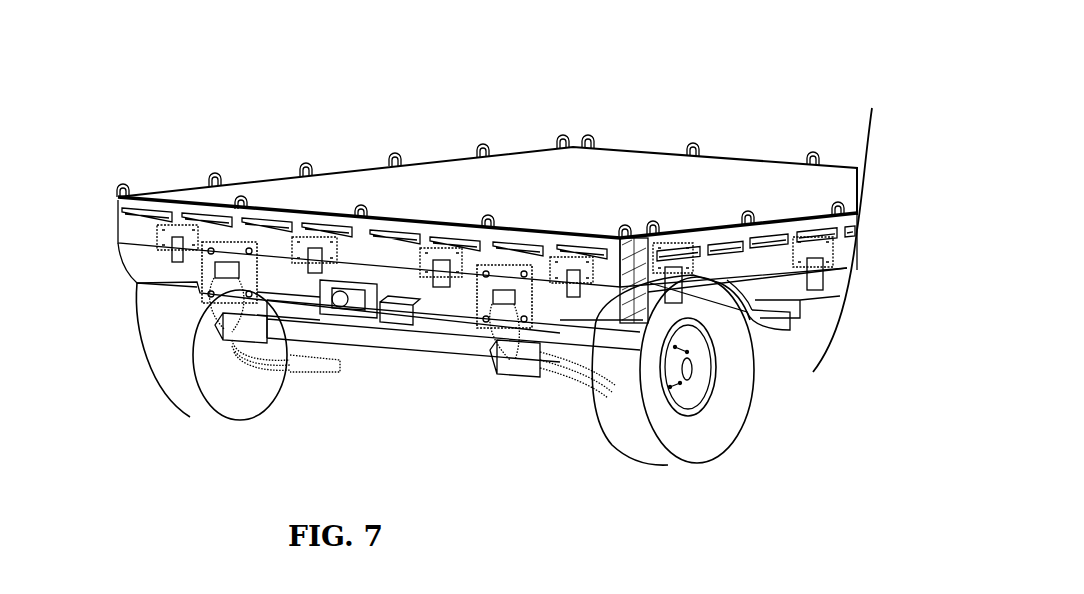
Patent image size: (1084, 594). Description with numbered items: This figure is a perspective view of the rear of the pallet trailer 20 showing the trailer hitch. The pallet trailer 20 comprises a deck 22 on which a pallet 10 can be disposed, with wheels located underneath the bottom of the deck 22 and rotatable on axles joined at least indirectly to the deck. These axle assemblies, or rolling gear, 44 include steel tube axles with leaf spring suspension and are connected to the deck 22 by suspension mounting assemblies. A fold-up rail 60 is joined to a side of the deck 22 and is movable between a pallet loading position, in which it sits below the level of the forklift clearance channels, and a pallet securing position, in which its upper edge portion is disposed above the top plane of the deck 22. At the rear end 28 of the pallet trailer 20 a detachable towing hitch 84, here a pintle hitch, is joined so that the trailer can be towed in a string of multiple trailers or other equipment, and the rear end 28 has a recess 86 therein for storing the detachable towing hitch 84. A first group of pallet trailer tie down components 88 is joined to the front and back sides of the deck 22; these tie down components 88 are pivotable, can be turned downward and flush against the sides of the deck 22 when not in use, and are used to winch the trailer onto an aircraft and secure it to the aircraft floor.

The 463L pallet 10 is at (602, 194).
The pallet trailer 20 is at (663, 100).
The deck 22 is at (145, 228).
The rear end 28 is at (397, 370).
The axle assemblies 44 is at (623, 413).
The fold-up rail 60 is at (362, 260).
The detachable towing hitch 84 is at (340, 310).
The recess 86 is at (397, 330).
The pallet trailer tie down components 88 is at (212, 300).